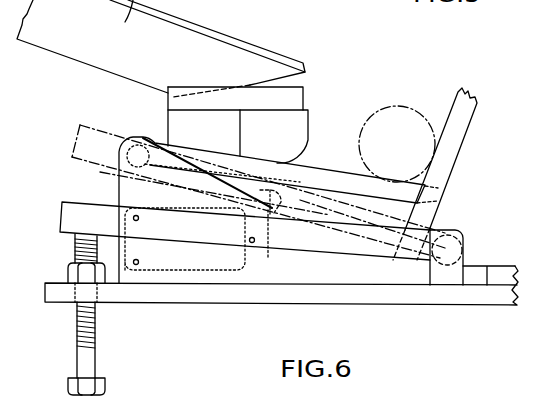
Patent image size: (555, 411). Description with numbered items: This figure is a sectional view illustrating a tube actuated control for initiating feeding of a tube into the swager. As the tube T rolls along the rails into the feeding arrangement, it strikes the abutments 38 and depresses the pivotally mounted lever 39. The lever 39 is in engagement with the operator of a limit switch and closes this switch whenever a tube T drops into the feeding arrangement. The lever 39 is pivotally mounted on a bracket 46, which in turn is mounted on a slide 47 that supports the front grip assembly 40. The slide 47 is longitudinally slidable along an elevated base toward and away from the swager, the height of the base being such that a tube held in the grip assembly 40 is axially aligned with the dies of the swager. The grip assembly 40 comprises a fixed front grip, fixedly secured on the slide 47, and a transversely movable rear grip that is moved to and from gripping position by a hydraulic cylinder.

The abutments 38 is at (469, 125).
The lever 39 is at (329, 178).
The front grip assembly 40 is at (308, 102).
The bracket 46 is at (119, 182).
The slide 47 is at (417, 298).
The tube T is at (403, 107).